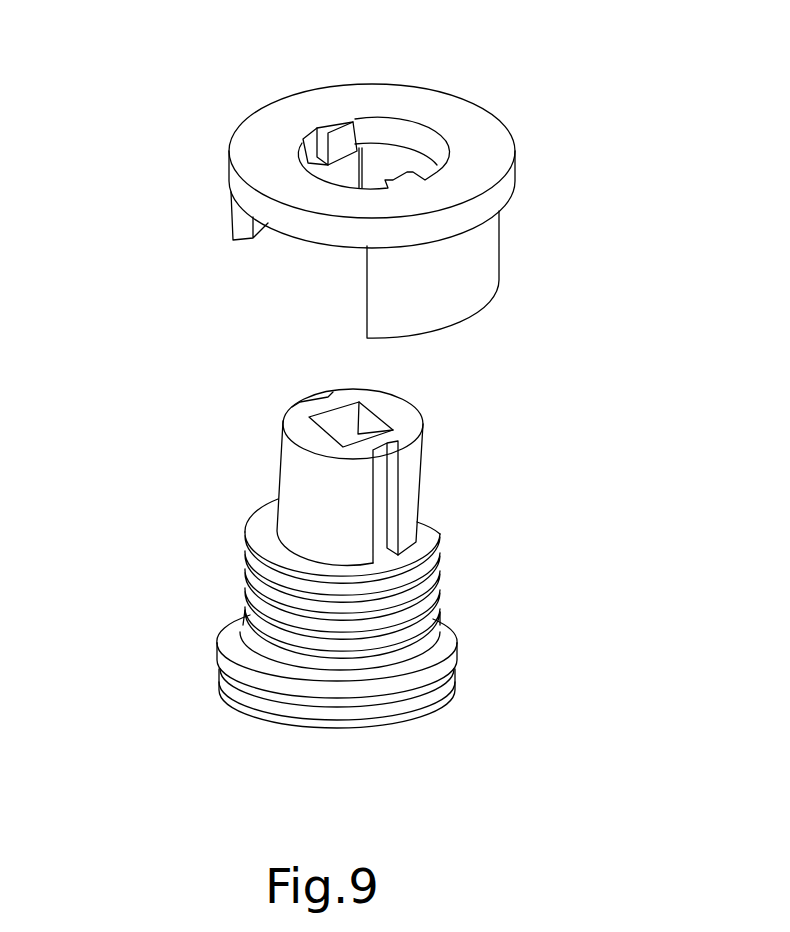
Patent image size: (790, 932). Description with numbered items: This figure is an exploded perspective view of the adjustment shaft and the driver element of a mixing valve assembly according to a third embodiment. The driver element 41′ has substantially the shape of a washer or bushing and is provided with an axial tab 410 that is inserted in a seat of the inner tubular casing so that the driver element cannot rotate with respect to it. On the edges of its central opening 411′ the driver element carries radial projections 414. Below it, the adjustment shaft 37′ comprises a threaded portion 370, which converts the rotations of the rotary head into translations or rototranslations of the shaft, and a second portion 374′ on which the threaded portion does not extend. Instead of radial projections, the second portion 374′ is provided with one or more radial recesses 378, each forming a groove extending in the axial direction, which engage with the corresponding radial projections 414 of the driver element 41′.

The driver element 41′ is at (527, 137).
The central opening 411′ is at (393, 163).
The radial projections 414 is at (336, 126).
The axial tab 410 is at (453, 293).
The adjustment shaft 37′ is at (455, 577).
The threaded portion 370 is at (147, 387).
The second portion 374′ is at (242, 405).
The radial recesses 378 is at (313, 398).